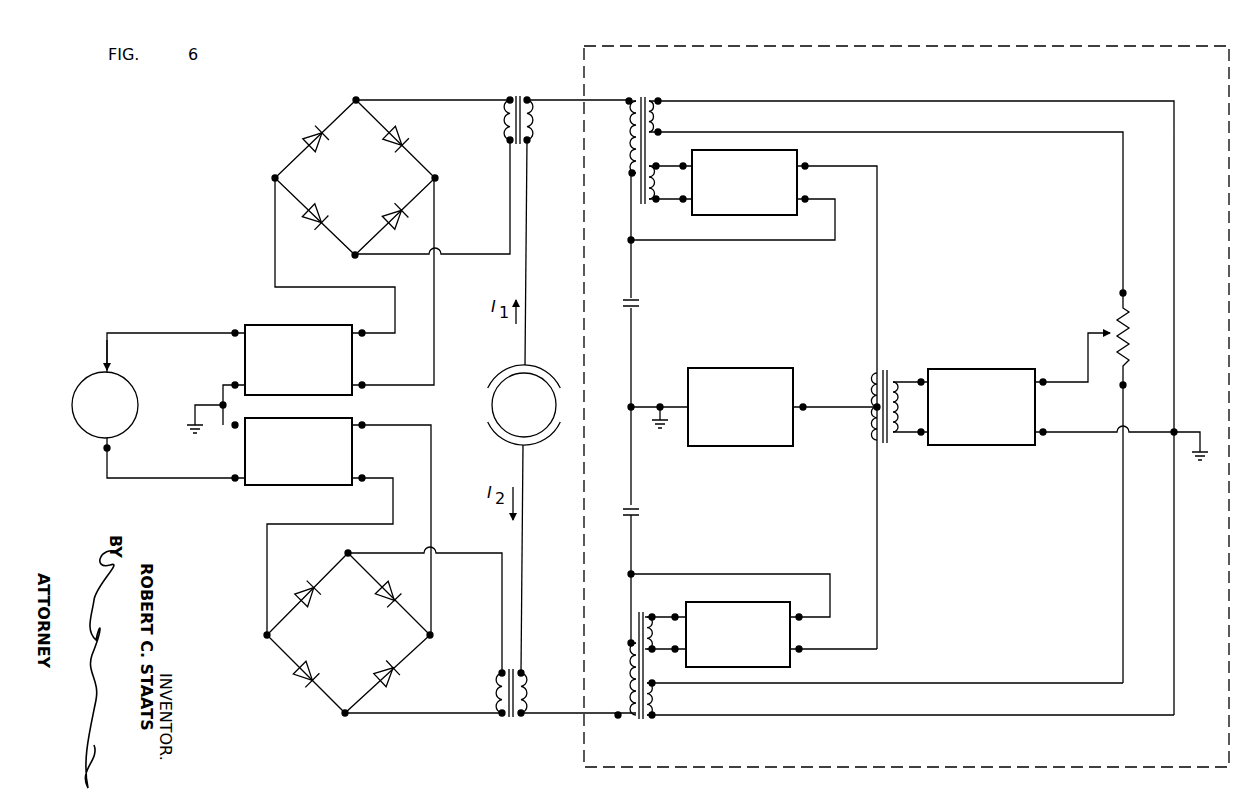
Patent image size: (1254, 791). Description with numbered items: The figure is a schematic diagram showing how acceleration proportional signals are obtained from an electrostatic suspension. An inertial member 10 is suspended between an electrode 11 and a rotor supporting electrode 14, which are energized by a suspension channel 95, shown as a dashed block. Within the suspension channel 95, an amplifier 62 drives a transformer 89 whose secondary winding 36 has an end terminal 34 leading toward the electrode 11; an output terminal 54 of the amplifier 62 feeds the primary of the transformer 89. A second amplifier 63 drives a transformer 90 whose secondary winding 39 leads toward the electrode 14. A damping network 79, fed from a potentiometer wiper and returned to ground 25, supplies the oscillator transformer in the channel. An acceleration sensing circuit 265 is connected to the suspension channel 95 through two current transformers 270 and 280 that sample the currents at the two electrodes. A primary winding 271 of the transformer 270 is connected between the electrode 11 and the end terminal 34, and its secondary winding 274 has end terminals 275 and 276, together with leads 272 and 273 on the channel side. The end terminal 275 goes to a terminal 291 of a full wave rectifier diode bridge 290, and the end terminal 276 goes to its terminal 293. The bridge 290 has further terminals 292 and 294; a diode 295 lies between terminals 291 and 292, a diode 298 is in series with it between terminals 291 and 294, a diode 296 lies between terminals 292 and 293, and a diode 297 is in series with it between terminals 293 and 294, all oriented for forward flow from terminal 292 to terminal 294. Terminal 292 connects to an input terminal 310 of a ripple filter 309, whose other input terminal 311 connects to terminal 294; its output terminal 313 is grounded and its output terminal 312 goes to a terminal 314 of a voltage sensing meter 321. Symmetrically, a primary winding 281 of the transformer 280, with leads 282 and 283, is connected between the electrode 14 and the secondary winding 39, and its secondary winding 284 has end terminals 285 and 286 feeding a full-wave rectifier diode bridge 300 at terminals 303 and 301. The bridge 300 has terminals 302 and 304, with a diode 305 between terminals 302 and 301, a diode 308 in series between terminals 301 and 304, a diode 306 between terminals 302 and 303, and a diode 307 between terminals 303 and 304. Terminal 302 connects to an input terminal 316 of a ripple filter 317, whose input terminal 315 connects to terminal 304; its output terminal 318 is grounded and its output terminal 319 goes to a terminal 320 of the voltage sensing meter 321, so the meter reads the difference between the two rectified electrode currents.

The inertial member 10 is at (533, 401).
The electrode 11 is at (536, 370).
The rotor supporting electrode 14 is at (506, 442).
The ground 25 is at (196, 434).
The end terminal 34 is at (629, 100).
The secondary winding 36 is at (632, 126).
The secondary winding 39 is at (630, 672).
The output terminal 54 is at (746, 368).
The amplifier 62 is at (793, 152).
The amplifier 63 is at (768, 602).
The damping network 79 is at (963, 369).
The transformer 89 is at (651, 93).
The transformer 90 is at (651, 603).
The suspension channel 95 is at (1006, 251).
The acceleration sensing circuit 265 is at (385, 411).
The current transformer 270 is at (528, 89).
The primary winding 271 is at (532, 117).
The secondary winding terminal 272 is at (530, 98).
The secondary winding terminal 273 is at (529, 142).
The secondary winding 274 is at (505, 115).
The end terminal 275 is at (506, 98).
The end terminal 276 is at (505, 140).
The current transformer 280 is at (524, 743).
The primary winding 281 is at (527, 690).
The secondary winding terminal 282 is at (523, 672).
The secondary winding terminal 283 is at (524, 712).
The secondary winding 284 is at (497, 693).
The end terminal 285 is at (500, 672).
The end terminal 286 is at (500, 714).
The full wave rectifier diode bridge 290 is at (367, 191).
The terminal 291 is at (356, 100).
The terminal 292 is at (275, 178).
The terminal 293 is at (355, 255).
The terminal 294 is at (435, 178).
The diode 295 is at (306, 138).
The diode 296 is at (306, 230).
The diode 297 is at (400, 228).
The diode 298 is at (398, 138).
The full-wave rectifier diode bridge 300 is at (352, 647).
The terminal 301 is at (345, 713).
The terminal 302 is at (267, 635).
The terminal 303 is at (348, 553).
The terminal 304 is at (430, 635).
The diode 305 is at (300, 680).
The diode 306 is at (298, 590).
The diode 307 is at (392, 590).
The diode 308 is at (386, 686).
The ripple filter 309 is at (275, 325).
The input terminal 310 is at (362, 333).
The input terminal 311 is at (363, 385).
The output terminal 312 is at (235, 333).
The output terminal 313 is at (235, 385).
The terminal 314 is at (108, 365).
The input terminal 315 is at (381, 437).
The input terminal 316 is at (362, 480).
The ripple filter 317 is at (292, 485).
The output terminal 318 is at (235, 427).
The output terminal 319 is at (235, 480).
The terminal 320 is at (109, 448).
The voltage sensing meter 321 is at (138, 402).